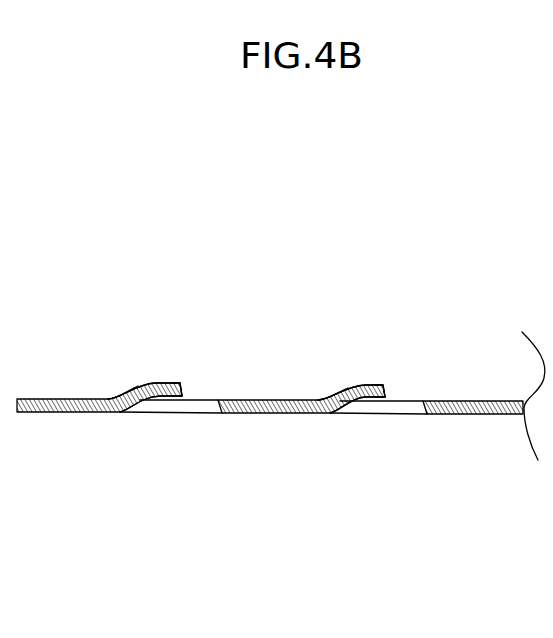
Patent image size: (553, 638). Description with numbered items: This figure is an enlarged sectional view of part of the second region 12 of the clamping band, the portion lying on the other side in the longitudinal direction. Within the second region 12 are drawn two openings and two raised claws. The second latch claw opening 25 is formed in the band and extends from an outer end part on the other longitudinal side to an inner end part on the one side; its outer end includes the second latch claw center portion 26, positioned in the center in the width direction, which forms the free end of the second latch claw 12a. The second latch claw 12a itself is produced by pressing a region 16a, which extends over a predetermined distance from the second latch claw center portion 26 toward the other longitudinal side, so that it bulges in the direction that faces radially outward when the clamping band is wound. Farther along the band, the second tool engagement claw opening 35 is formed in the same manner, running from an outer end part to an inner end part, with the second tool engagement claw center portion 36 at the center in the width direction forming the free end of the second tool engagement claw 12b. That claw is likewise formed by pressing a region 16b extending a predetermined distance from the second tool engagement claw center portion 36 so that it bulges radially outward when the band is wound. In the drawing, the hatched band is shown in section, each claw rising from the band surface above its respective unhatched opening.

The second region 12 is at (131, 324).
The second latch claw 12a is at (164, 367).
The second tool engagement claw 12b is at (367, 369).
The region 16a is at (128, 393).
The region 16b is at (335, 392).
The second latch claw opening 25 is at (168, 419).
The second tool engagement claw opening 35 is at (376, 427).
The second latch claw center portion 26 is at (182, 385).
The second tool engagement claw center portion 36 is at (383, 387).